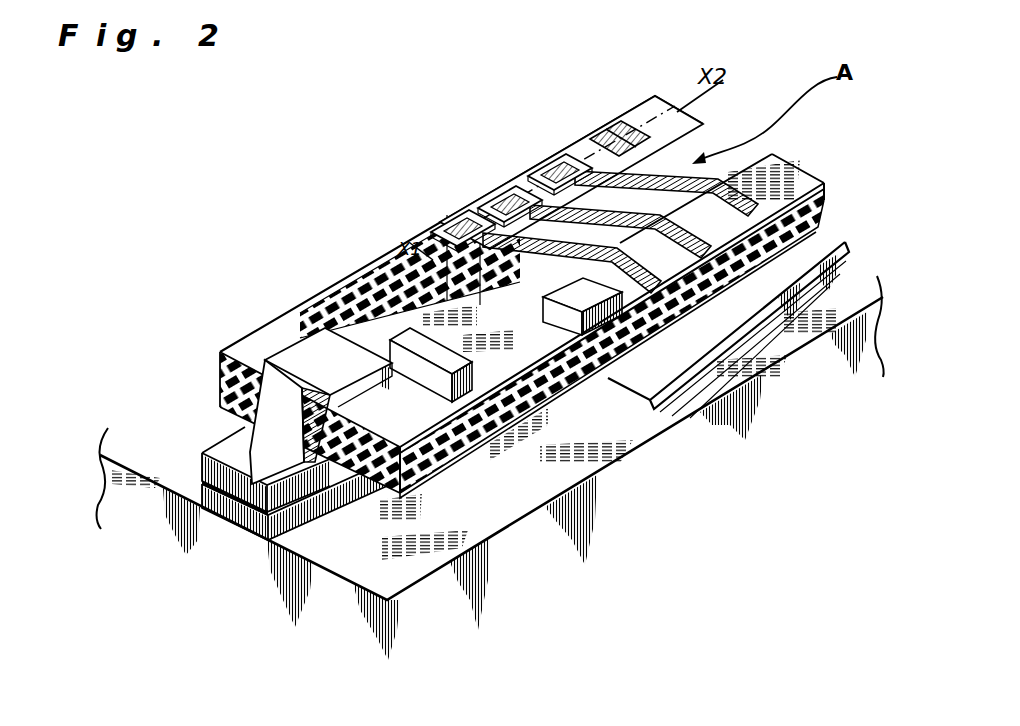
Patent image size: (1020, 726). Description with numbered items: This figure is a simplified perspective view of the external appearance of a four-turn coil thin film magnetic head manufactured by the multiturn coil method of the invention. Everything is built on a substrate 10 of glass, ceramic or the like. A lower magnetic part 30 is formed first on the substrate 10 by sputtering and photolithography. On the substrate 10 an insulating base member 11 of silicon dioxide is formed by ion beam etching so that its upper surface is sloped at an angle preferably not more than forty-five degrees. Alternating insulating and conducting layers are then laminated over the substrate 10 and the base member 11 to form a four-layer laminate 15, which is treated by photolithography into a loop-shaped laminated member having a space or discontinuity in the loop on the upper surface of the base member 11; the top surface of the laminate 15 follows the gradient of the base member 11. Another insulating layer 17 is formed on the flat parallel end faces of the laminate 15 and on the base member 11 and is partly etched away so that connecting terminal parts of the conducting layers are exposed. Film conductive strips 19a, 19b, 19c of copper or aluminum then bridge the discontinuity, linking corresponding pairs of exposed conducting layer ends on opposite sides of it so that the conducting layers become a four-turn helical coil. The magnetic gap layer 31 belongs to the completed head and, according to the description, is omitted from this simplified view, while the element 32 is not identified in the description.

The substrate 10 is at (645, 511).
The insulating base member 11 is at (733, 297).
The four-layer laminate 15 is at (513, 438).
The insulating layer 17 is at (282, 330).
The film conductive strip 19a is at (560, 156).
The film conductive strip 19b is at (503, 188).
The film conductive strip 19c is at (464, 216).
The lower magnetic part 30 is at (300, 515).
The magnetic gap layer 31 is at (240, 503).
The lead contact 32 is at (227, 452).